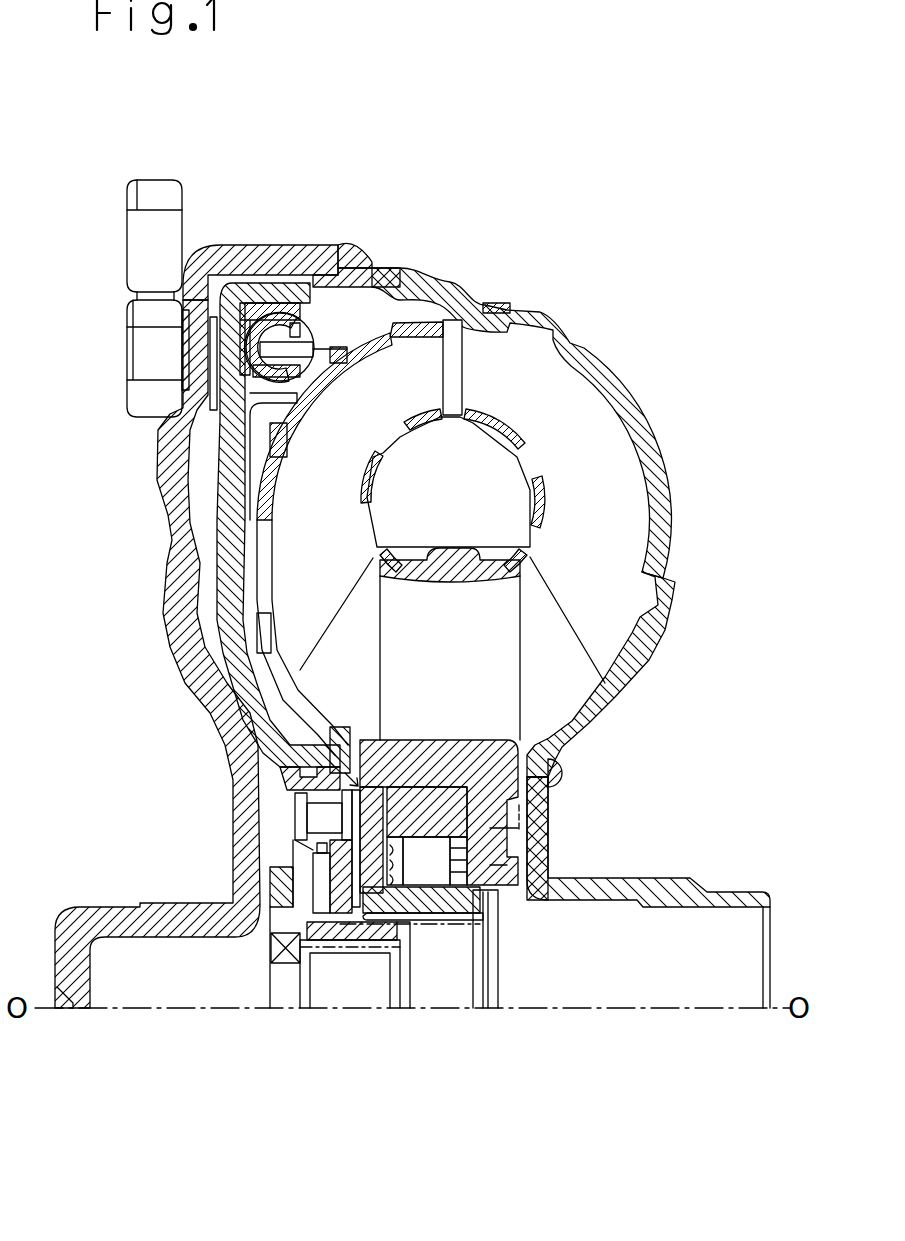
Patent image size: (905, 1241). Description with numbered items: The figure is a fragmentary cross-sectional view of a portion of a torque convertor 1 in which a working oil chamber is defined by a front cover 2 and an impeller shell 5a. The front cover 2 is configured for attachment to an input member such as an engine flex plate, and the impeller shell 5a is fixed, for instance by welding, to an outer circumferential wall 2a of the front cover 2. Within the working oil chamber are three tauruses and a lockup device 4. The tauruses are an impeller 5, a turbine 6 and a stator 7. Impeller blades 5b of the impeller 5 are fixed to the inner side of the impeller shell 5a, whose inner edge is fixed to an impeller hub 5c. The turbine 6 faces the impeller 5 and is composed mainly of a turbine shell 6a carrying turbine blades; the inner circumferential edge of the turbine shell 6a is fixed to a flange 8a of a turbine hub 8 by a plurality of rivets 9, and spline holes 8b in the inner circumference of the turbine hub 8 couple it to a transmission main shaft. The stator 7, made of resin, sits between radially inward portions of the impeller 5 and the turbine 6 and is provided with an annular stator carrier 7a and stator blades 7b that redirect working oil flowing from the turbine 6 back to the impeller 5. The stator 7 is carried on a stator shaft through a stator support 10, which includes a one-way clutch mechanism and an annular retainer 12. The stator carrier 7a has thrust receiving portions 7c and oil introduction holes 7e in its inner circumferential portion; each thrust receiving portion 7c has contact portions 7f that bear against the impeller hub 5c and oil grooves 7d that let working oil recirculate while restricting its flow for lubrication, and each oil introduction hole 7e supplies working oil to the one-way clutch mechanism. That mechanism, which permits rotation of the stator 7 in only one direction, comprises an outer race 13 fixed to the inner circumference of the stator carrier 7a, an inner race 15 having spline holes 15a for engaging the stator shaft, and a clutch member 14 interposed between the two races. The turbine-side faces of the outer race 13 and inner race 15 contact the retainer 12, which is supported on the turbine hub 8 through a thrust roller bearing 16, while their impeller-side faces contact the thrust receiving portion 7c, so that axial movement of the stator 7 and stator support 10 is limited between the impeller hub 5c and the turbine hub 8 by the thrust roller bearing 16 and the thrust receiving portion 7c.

The torque convertor 1 is at (627, 278).
The front cover 2 is at (183, 515).
The outer circumferential wall 2a is at (282, 247).
The lockup device 4 is at (330, 323).
The impeller 5 is at (690, 521).
The impeller shell 5a is at (648, 438).
The impeller blades 5b is at (605, 625).
The impeller hub 5c is at (667, 885).
The turbine 6 is at (415, 383).
The turbine shell 6a is at (260, 576).
The stator 7 is at (500, 651).
The stator carrier 7a is at (428, 743).
The stator blades 7b is at (400, 658).
The thrust receiving portion 7c is at (545, 811).
The oil groove 7d is at (527, 850).
The oil introduction hole 7e is at (513, 892).
The contact portions 7f is at (550, 829).
The turbine hub 8 is at (330, 943).
The flange 8a is at (275, 768).
The spline holes 8b is at (350, 958).
The rivets 9 is at (300, 815).
The stator support 10 is at (228, 737).
The retainer 12 is at (385, 923).
The outer race 13 is at (437, 776).
The clutch member 14 is at (423, 853).
The inner race 15 is at (467, 938).
The spline holes 15a is at (420, 958).
The thrust roller bearing 16 is at (320, 891).